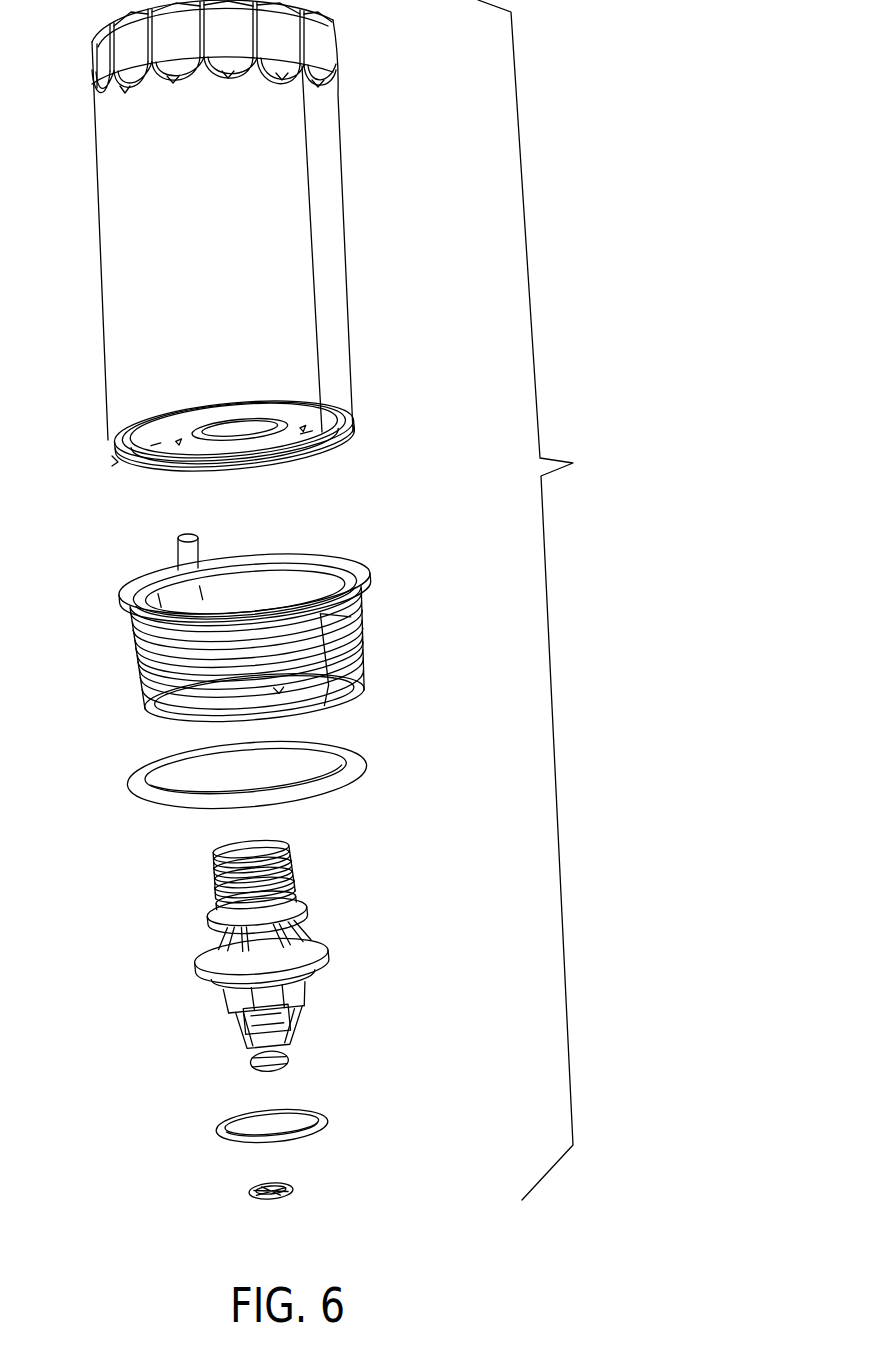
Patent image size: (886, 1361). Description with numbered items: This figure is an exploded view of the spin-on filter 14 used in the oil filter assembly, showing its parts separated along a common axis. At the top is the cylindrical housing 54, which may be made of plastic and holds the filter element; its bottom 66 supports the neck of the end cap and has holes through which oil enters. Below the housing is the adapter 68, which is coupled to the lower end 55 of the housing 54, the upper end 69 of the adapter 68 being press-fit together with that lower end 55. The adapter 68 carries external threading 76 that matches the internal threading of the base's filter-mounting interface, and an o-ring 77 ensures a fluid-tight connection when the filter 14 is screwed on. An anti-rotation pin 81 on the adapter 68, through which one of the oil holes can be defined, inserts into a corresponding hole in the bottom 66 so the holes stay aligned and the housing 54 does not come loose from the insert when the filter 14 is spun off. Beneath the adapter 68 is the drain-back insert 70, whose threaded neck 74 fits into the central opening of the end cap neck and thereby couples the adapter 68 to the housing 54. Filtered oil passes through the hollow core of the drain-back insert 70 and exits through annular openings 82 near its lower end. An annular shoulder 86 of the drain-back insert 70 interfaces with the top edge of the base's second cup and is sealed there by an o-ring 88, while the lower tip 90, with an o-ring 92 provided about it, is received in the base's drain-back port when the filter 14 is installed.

The filter 14 is at (541, 600).
The cylindrical housing 54 is at (342, 192).
The lower end 55 is at (118, 462).
The bottom 66 is at (315, 455).
The adapter 68 is at (250, 617).
The upper end 69 is at (357, 562).
The drain-back insert 70 is at (267, 958).
The neck 74 is at (295, 862).
The external threading 76 is at (368, 652).
The o-ring 77 is at (128, 778).
The anti-rotation pin 81 is at (205, 546).
The annular openings 82 is at (293, 1023).
The annular shoulder 86 is at (195, 962).
The o-ring 88 is at (220, 1125).
The lower tip 90 is at (250, 1067).
The o-ring 92 is at (293, 1190).